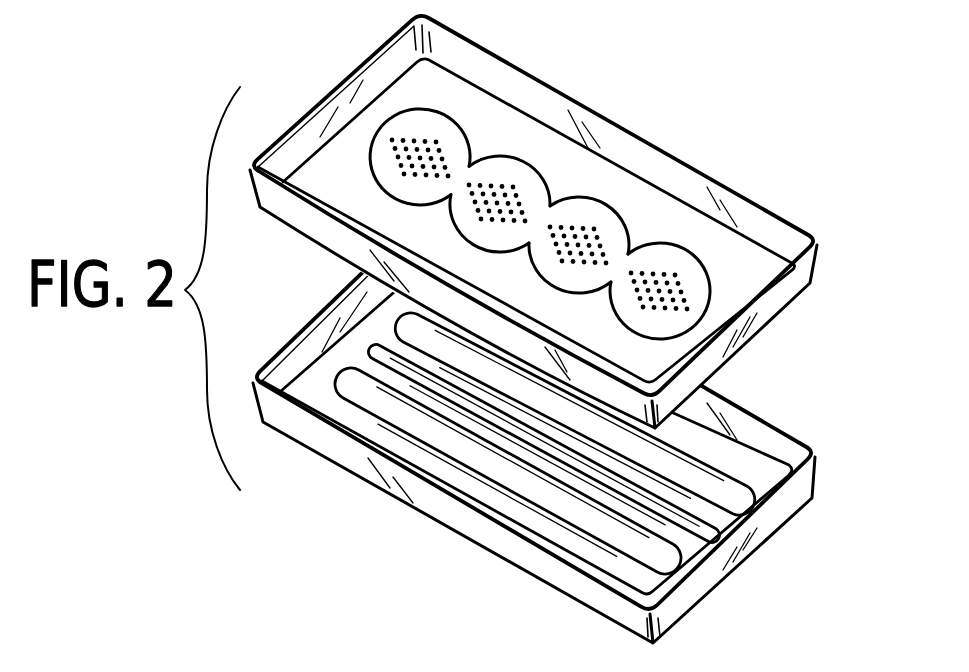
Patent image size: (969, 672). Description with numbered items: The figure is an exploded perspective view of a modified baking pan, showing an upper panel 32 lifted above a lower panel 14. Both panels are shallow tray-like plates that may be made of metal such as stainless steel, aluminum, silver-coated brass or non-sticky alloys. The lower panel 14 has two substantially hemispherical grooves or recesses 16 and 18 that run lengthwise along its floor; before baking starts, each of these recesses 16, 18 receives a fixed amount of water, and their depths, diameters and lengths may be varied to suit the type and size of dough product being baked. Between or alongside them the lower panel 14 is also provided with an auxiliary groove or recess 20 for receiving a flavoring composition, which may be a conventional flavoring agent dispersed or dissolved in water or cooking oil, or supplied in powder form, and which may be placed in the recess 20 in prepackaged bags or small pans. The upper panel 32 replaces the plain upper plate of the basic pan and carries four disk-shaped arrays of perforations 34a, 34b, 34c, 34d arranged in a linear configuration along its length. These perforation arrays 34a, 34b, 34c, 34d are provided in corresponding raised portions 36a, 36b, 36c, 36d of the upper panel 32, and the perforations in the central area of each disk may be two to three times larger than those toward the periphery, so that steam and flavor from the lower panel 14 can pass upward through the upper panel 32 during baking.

The lower panel 14 is at (300, 457).
The hemispherical recess 16 is at (433, 437).
The hemispherical recess 18 is at (660, 477).
The auxiliary recess 20 is at (525, 433).
The upper panel 32 is at (800, 318).
The disk-shaped array of perforations 34a is at (393, 141).
The disk-shaped array of perforations 34b is at (473, 183).
The disk-shaped array of perforations 34c is at (553, 228).
The disk-shaped array of perforations 34d is at (636, 262).
The raised portion 36a is at (424, 133).
The raised portion 36b is at (502, 173).
The raised portion 36c is at (583, 218).
The raised portion 36d is at (660, 267).